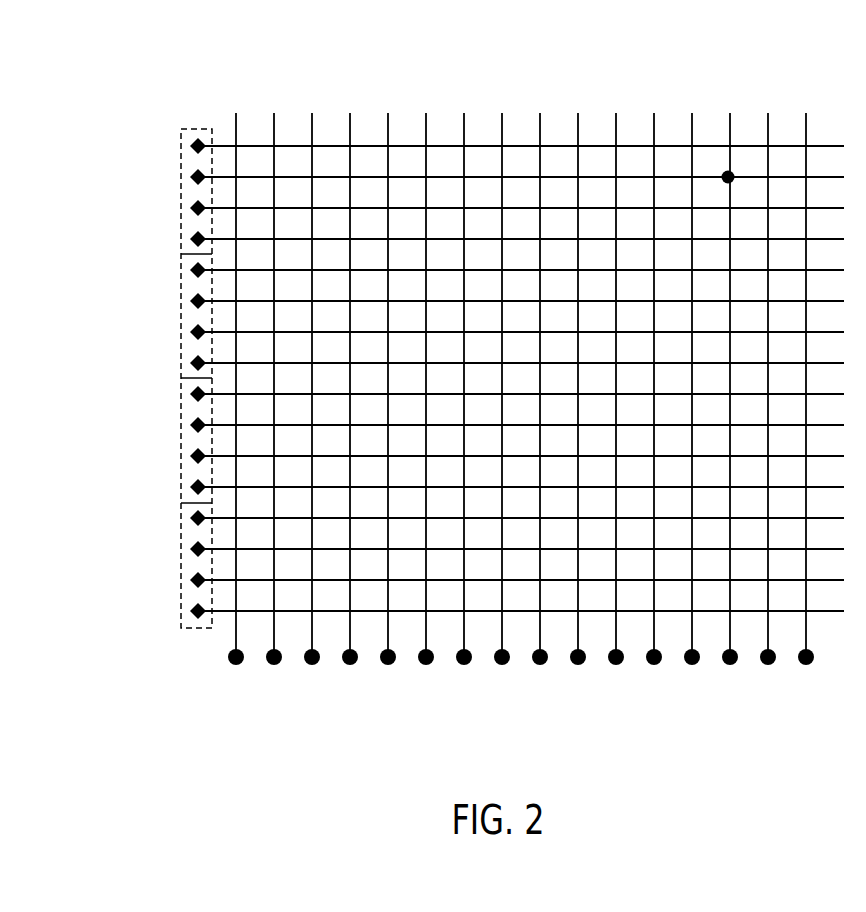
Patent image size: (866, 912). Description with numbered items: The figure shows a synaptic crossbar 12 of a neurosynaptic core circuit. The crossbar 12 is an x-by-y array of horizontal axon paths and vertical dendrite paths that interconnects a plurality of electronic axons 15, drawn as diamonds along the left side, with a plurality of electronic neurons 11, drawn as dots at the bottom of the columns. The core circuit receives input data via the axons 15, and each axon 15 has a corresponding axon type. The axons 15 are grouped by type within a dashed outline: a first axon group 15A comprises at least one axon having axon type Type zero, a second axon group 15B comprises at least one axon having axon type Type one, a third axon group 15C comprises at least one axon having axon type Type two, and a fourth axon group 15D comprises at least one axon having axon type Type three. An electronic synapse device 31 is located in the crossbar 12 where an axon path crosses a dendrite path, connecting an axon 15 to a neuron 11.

The synaptic crossbar 12 is at (495, 43).
The electronic neuron 11 is at (236, 666).
The electronic axon 15 is at (183, 146).
The first axon group 15A is at (181, 239).
The second axon group 15B is at (181, 363).
The third axon group 15C is at (181, 487).
The fourth axon group 15D is at (181, 611).
The electronic synapse device 31 is at (729, 168).